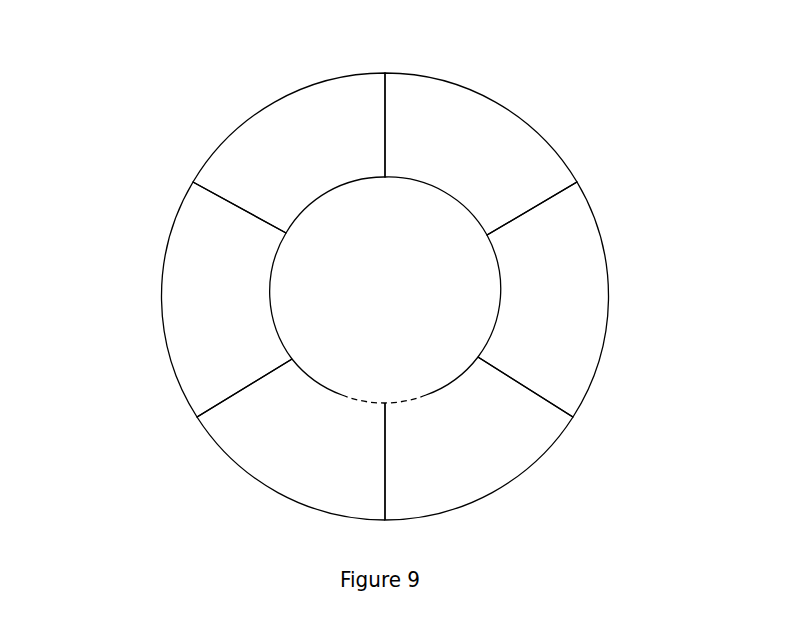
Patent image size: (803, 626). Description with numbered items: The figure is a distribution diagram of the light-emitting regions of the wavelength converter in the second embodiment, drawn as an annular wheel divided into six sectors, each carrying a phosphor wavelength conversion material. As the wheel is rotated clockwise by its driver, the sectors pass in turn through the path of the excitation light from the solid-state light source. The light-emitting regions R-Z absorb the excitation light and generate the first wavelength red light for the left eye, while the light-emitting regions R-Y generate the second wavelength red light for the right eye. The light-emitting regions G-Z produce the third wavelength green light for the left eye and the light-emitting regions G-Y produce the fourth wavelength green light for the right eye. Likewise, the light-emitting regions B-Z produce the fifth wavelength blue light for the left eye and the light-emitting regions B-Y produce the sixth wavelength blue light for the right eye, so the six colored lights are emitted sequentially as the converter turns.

The light-emitting region B-Y is at (295, 107).
The light-emitting region R-Z is at (490, 113).
The light-emitting region R-Y is at (597, 292).
The light-emitting region G-Z is at (488, 480).
The light-emitting region G-Y is at (287, 484).
The light-emitting region B-Z is at (173, 278).